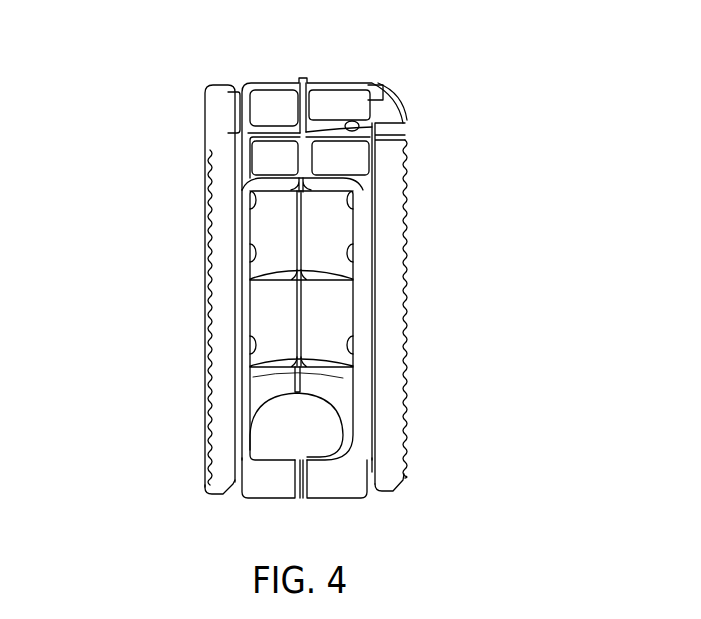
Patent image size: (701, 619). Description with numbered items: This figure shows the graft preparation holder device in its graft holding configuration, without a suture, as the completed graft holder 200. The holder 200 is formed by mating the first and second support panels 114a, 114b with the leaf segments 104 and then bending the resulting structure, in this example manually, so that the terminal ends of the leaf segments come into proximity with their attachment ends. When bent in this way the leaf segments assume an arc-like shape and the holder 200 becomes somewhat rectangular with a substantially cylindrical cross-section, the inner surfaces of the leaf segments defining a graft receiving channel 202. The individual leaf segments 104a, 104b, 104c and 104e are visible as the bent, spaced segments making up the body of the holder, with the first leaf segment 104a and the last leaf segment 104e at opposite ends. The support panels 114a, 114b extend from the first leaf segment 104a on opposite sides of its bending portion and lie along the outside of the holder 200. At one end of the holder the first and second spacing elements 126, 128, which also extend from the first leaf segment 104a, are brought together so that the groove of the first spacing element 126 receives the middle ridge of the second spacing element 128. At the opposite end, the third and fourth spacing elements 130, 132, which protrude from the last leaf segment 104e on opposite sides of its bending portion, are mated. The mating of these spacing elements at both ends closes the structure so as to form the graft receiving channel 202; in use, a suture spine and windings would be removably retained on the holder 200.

The graft holder 200 is at (118, 129).
The graft receiving channel 202 is at (328, 110).
The last leaf segment 104e is at (358, 110).
The fourth spacing element 132 is at (273, 157).
The third spacing element 130 is at (358, 160).
The leaf segments 104 is at (527, 241).
The leaf segment 104c is at (338, 240).
The leaf segment 104b is at (327, 322).
The first leaf segment 104a is at (328, 390).
The second spacing element 128 is at (262, 482).
The first spacing element 126 is at (342, 482).
The second support panel 114b is at (230, 229).
The first support panel 114a is at (393, 204).